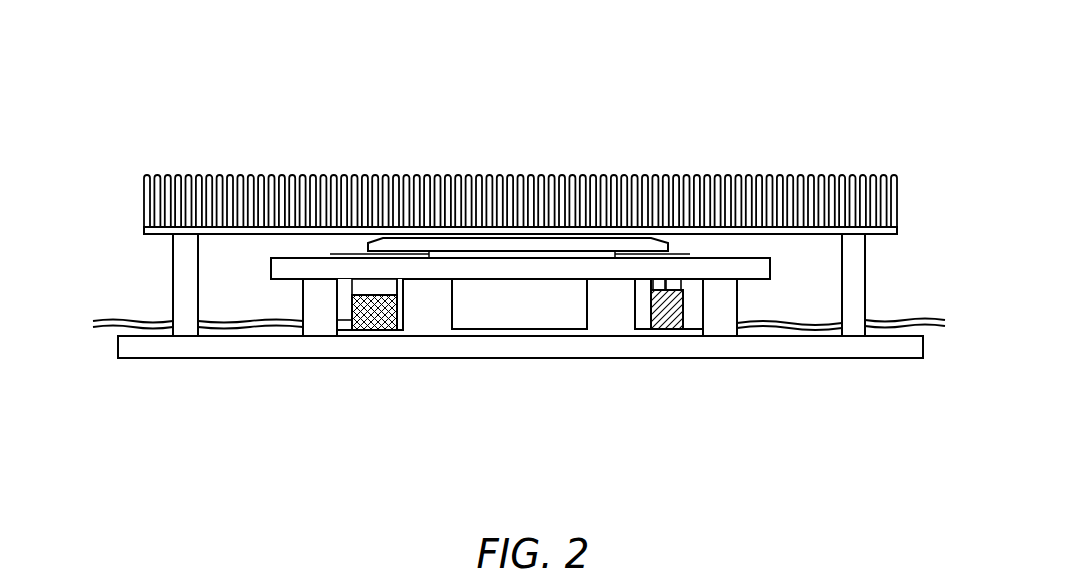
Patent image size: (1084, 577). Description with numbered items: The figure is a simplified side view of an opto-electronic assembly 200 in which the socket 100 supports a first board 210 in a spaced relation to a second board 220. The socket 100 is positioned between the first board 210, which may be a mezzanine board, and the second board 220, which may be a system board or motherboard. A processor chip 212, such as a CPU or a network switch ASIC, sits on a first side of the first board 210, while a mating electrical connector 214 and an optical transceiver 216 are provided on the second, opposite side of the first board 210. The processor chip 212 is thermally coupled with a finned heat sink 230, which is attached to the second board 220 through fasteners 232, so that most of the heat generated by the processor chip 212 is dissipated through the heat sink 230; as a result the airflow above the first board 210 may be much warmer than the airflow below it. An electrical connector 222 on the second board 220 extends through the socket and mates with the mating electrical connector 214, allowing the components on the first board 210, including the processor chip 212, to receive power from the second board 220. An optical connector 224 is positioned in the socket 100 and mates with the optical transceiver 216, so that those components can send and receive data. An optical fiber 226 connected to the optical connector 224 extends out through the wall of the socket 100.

The opto-electronic assembly 200 is at (561, 75).
The socket 100 is at (322, 337).
The first board 210 is at (727, 258).
The processor chip 212 is at (494, 237).
The mating electrical connector 214 is at (362, 279).
The optical transceiver 216 is at (683, 320).
The second board 220 is at (483, 358).
The electrical connector 222 is at (375, 330).
The optical connector 224 is at (660, 330).
The optical fiber 226 is at (800, 328).
The heat sink 230 is at (162, 176).
The fasteners 232 is at (173, 299).